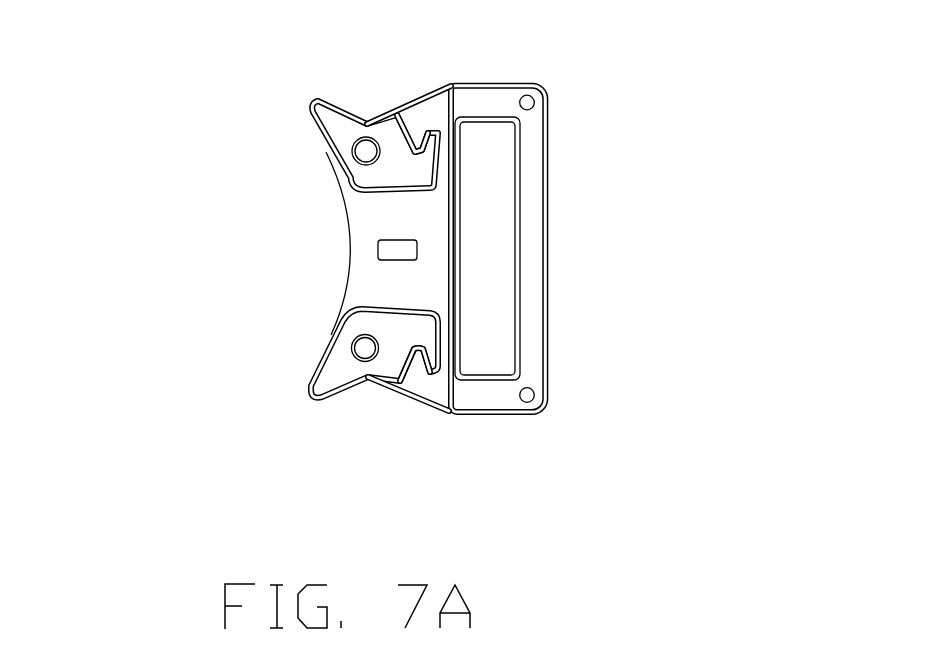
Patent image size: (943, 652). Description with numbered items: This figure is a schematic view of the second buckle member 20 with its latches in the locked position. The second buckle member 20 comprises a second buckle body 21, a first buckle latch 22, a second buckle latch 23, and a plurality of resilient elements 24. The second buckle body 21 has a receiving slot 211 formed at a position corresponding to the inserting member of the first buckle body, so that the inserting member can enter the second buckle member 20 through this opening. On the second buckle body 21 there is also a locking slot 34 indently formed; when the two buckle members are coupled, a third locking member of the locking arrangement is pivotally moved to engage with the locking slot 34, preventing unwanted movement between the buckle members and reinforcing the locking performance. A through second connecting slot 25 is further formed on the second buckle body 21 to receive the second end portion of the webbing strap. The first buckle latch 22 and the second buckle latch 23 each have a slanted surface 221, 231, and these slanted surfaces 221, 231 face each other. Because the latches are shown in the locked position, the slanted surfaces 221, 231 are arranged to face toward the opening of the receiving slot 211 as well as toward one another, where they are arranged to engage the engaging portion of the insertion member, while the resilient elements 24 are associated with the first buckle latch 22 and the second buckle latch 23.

The second buckle member 20 is at (642, 210).
The second buckle body 21 is at (376, 248).
The receiving slot 211 is at (300, 235).
The first buckle latch 22 is at (338, 101).
The slanted surface 221 is at (418, 147).
The second buckle latch 23 is at (382, 342).
The slanted surface 231 is at (440, 290).
The resilient elements 24 is at (347, 158).
The second connecting slot 25 is at (540, 165).
The locking slot 34 is at (440, 236).